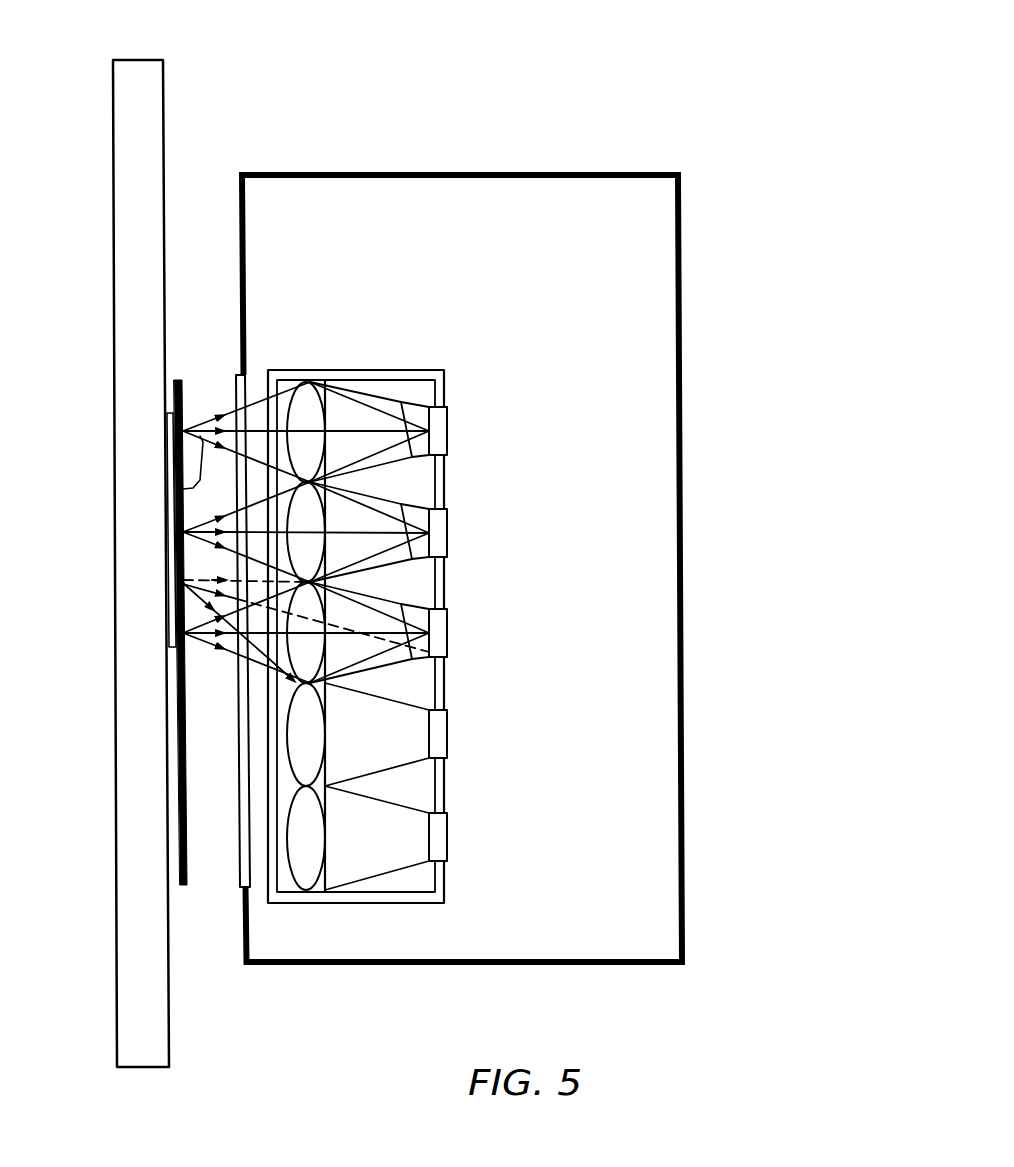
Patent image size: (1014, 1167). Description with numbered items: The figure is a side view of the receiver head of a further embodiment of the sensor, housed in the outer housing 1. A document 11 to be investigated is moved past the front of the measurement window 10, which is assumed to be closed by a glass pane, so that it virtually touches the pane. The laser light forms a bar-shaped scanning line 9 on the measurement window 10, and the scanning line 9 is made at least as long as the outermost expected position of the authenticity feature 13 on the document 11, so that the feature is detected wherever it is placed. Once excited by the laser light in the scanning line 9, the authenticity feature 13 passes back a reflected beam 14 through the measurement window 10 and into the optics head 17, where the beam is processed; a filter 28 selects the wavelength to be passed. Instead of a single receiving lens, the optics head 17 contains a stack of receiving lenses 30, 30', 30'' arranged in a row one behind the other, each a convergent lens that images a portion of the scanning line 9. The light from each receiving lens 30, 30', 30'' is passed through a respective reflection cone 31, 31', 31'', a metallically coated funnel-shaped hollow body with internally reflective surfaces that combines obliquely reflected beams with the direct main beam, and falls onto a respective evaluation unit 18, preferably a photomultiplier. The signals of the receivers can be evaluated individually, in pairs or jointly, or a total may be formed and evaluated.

The outer housing 1 is at (541, 175).
The scanning line 9 is at (180, 380).
The measurement window 10 is at (248, 373).
The document 11 is at (147, 102).
The authenticity feature 13 is at (168, 473).
The reflected beam 14 is at (183, 489).
The optics head 17 is at (416, 370).
The evaluation unit 18 is at (438, 432).
The filter 28 is at (421, 647).
The receiving lens 30 is at (355, 373).
The receiving lens 30' is at (425, 576).
The receiving lens 30'' is at (343, 908).
The reflection cone 31 is at (474, 448).
The reflection cone 31' is at (434, 558).
The reflection cone 31'' is at (457, 838).